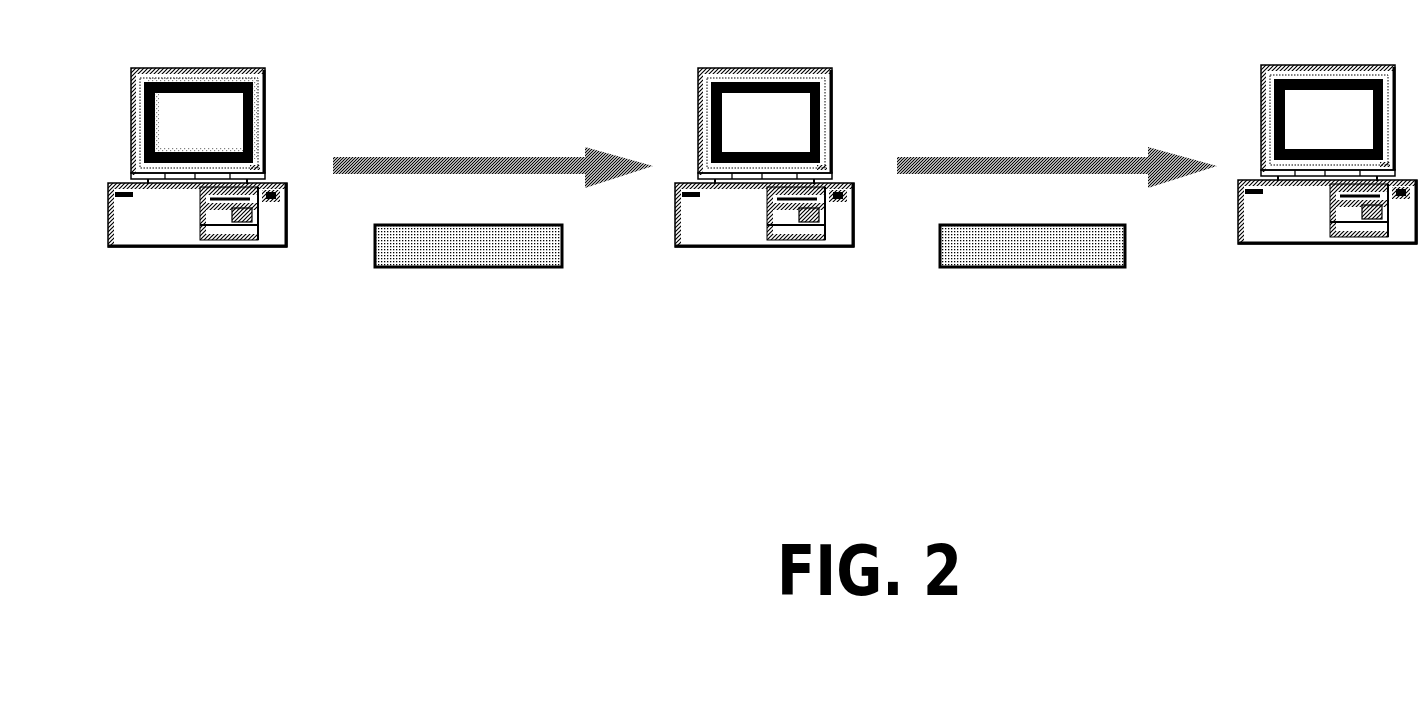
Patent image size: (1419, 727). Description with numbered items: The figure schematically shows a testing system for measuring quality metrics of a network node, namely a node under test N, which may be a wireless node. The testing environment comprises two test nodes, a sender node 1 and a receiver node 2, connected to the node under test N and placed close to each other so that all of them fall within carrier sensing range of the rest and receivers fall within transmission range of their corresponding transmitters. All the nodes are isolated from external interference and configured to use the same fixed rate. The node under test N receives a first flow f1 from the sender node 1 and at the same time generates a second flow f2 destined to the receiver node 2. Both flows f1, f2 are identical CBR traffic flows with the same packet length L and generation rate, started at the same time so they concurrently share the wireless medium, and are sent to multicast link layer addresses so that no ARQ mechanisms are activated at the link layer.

The sender node 1 is at (197, 195).
The receiver node 2 is at (1327, 188).
The node under test N is at (764, 123).
The first flow f1 is at (493, 140).
The second flow f2 is at (1057, 141).
The packet length L is at (375, 318).